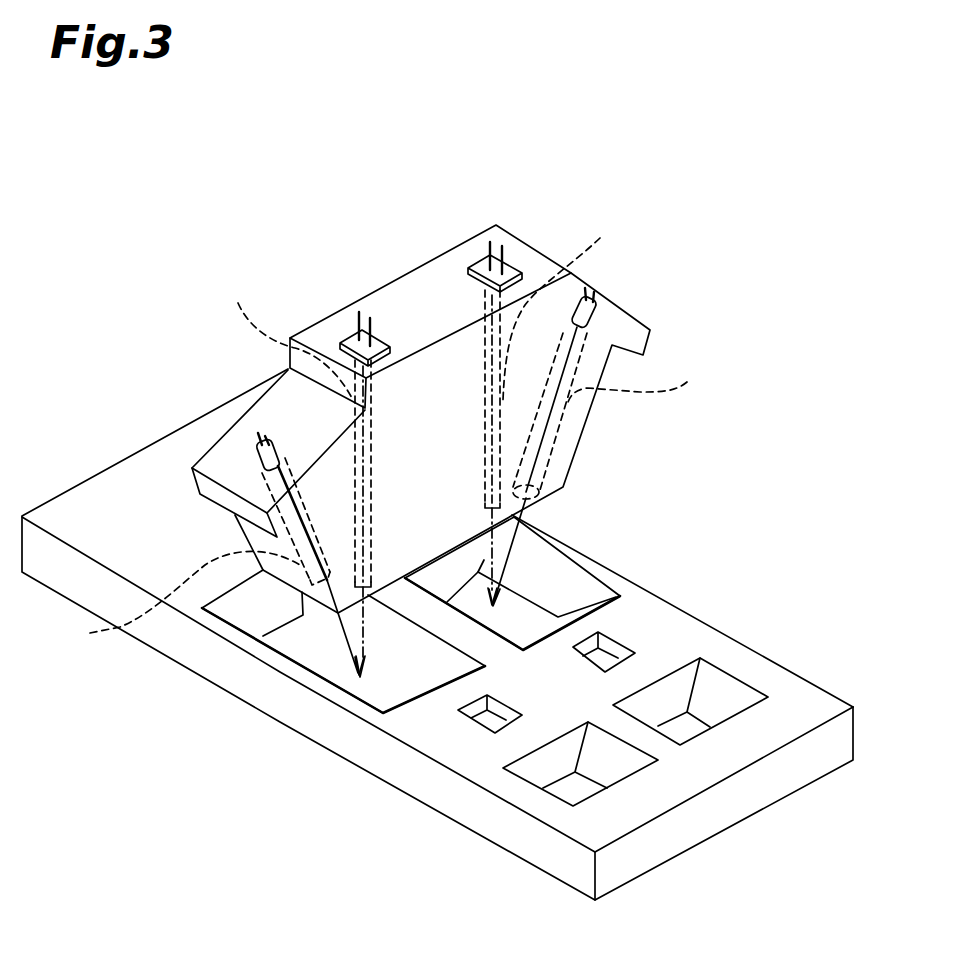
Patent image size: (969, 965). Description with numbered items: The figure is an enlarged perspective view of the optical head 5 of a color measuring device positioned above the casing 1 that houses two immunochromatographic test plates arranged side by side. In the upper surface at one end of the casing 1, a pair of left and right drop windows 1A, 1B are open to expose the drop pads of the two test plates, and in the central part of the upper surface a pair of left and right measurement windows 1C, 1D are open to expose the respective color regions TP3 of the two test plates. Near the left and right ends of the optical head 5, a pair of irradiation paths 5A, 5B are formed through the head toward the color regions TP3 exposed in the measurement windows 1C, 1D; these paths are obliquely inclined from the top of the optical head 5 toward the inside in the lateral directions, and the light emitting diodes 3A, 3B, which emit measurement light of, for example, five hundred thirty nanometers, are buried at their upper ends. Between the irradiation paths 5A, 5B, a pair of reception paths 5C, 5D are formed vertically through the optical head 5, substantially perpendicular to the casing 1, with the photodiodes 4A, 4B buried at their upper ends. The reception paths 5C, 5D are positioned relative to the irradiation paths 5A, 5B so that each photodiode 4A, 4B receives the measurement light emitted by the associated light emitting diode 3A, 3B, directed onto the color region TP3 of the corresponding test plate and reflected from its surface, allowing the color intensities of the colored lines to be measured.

The casing 1 is at (241, 704).
The drop window 1A is at (547, 767).
The drop window 1B is at (716, 688).
The measurement window 1C is at (430, 662).
The measurement window 1D is at (537, 565).
The color region TP3 is at (537, 617).
The light emitting diode 3A is at (256, 453).
The light emitting diode 3B is at (598, 322).
The photodiode 4A is at (346, 336).
The photodiode 4B is at (482, 250).
The optical head 5 is at (398, 270).
The irradiation path 5A is at (175, 602).
The irradiation path 5B is at (639, 376).
The reception path 5C is at (284, 337).
The reception path 5D is at (562, 349).